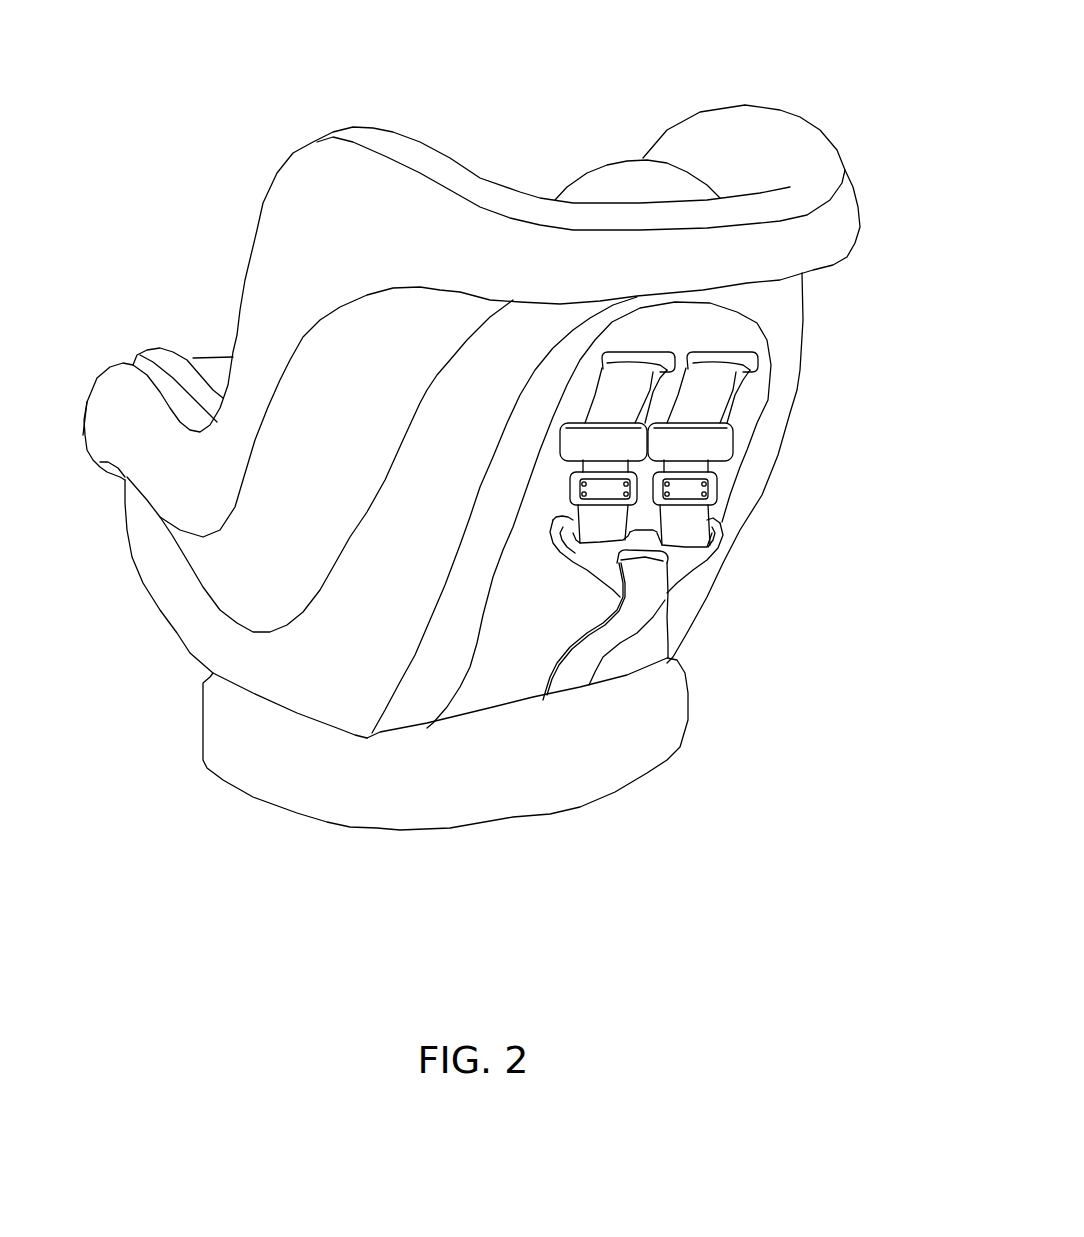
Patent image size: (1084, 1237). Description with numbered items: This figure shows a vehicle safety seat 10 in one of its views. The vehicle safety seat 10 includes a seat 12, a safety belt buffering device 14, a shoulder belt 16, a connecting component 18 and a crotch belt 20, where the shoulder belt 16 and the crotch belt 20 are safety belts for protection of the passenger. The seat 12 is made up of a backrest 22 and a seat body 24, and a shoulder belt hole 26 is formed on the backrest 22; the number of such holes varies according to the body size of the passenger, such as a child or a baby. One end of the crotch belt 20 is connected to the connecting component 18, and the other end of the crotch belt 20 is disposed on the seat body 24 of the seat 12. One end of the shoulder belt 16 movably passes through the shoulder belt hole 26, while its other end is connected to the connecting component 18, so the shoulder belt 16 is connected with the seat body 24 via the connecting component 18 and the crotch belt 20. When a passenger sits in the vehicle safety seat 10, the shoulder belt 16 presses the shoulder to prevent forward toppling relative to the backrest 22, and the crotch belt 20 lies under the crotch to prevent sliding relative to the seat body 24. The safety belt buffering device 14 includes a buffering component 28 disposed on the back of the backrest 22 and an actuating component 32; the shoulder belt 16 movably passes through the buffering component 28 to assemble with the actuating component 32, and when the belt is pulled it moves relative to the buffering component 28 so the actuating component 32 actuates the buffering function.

The vehicle safety seat 10 is at (471, 282).
The seat 12 is at (493, 940).
The safety belt buffering device 14 is at (846, 470).
The shoulder belt 16 is at (726, 426).
The connecting component 18 is at (656, 581).
The crotch belt 20 is at (643, 671).
The backrest 22 is at (464, 599).
The seat body 24 is at (430, 760).
The shoulder belt hole 26 is at (680, 307).
The buffering component 28 is at (695, 444).
The actuating component 32 is at (700, 492).